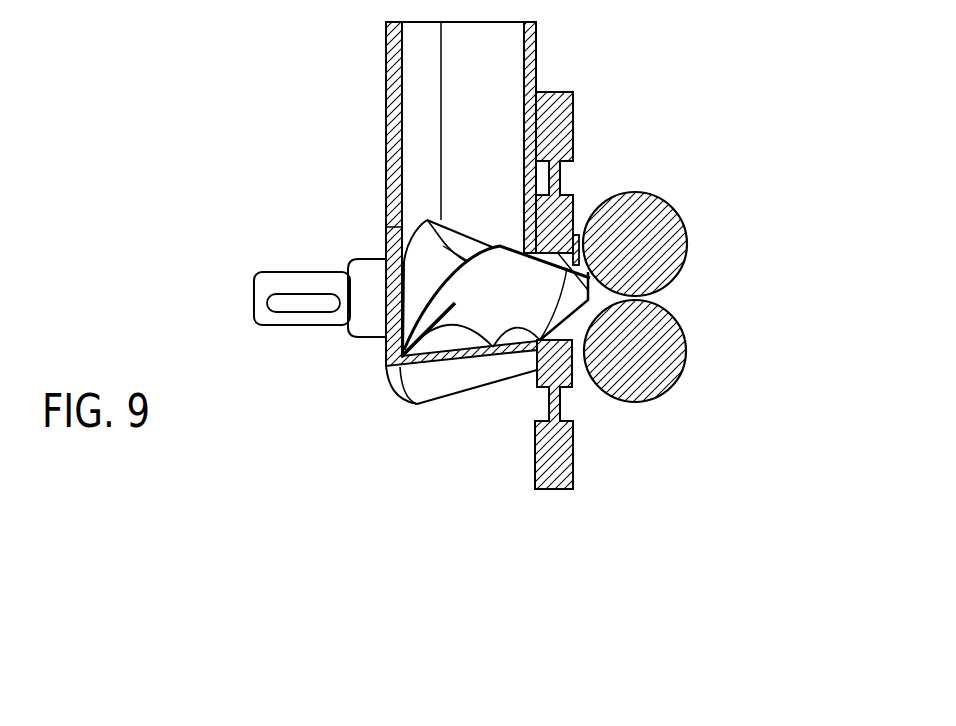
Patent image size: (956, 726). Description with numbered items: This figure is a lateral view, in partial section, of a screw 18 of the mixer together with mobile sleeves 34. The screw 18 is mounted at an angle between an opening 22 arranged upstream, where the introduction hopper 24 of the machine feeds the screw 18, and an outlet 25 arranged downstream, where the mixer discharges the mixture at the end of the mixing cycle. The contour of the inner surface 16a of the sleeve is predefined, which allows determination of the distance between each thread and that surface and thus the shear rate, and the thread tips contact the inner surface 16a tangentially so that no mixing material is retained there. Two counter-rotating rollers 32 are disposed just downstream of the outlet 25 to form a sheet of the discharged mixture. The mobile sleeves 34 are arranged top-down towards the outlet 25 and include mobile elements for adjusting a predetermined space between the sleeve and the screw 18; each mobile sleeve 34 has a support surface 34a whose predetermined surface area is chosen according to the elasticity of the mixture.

The inner surface 16a is at (448, 342).
The screw 18 is at (388, 348).
The opening 22 is at (432, 190).
The introduction hopper 24 is at (386, 83).
The outlet 25 is at (573, 342).
The counter-rotating rollers 32 is at (662, 250).
The mobile sleeve 34 is at (562, 195).
The support surface 34a is at (553, 250).